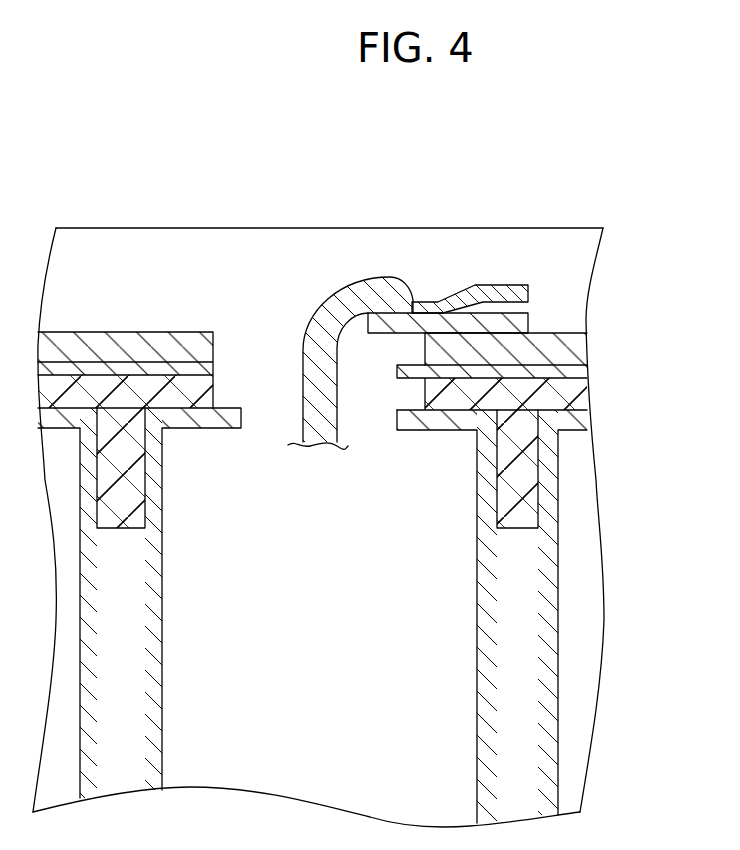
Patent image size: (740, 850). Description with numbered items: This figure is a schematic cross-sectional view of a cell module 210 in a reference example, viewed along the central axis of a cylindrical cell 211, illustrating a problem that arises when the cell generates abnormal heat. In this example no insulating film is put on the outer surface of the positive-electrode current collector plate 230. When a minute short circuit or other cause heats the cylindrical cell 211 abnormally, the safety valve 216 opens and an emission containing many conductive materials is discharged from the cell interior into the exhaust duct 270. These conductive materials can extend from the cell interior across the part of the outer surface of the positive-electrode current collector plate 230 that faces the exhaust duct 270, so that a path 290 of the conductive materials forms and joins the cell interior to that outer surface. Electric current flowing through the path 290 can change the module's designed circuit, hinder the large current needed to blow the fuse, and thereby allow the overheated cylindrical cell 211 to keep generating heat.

The cell module 210 is at (319, 200).
The cylindrical cell 211 is at (332, 649).
The safety valve 216 is at (420, 318).
The positive-electrode current collector plate 230 is at (553, 338).
The exhaust duct 270 is at (186, 221).
The path of the conductive materials 290 is at (348, 302).